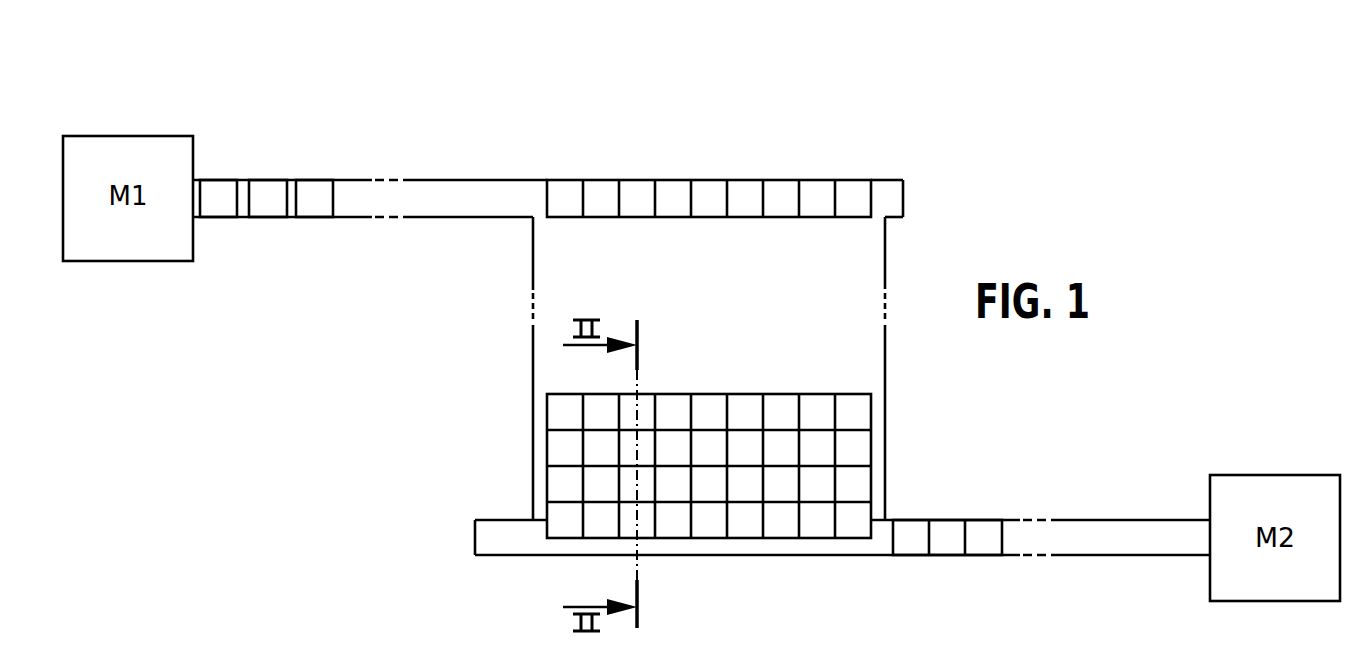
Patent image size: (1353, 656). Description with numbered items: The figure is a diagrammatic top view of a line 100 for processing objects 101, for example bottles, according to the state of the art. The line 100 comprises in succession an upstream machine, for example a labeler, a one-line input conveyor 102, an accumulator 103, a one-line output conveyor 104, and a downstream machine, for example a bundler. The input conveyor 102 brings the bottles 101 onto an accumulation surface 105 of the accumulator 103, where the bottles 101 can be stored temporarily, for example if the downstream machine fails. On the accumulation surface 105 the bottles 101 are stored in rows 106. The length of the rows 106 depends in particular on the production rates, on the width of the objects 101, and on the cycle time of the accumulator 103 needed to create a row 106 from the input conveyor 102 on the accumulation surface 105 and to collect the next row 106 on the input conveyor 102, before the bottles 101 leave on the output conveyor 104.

The line 100 is at (740, 108).
The objects 101 is at (315, 198).
The one-line input conveyor 102 is at (445, 198).
The accumulator 103 is at (885, 259).
The one-line output conveyor 104 is at (498, 542).
The accumulation surface 105 is at (730, 308).
The rows 106 is at (527, 468).